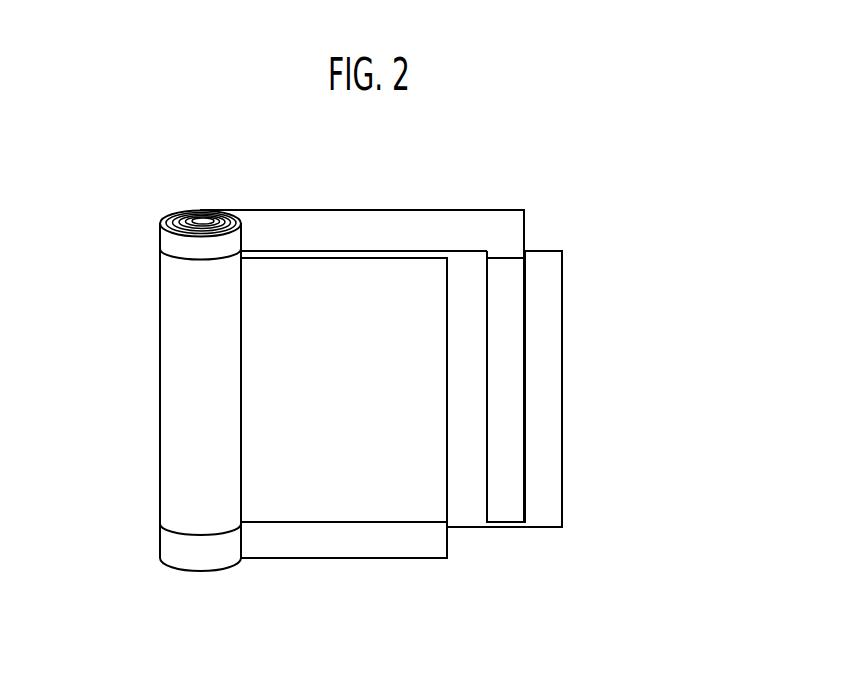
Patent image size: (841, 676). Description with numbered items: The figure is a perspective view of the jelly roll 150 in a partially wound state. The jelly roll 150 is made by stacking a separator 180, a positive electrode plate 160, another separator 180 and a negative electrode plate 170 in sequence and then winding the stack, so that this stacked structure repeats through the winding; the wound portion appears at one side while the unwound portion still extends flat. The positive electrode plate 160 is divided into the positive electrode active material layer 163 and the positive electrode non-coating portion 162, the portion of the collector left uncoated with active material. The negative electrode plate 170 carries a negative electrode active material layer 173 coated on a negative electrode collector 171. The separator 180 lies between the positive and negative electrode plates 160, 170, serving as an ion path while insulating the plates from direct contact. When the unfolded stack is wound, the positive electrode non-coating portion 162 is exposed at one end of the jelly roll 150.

The jelly roll 150 is at (162, 206).
The positive electrode plate 160 is at (396, 310).
The positive electrode non-coating portion 162 is at (497, 218).
The positive electrode active material layer 163 is at (515, 277).
The negative electrode plate 170 is at (344, 458).
The negative electrode collector 171 is at (331, 540).
The negative electrode active material layer 173 is at (277, 512).
The separator 180 is at (548, 510).